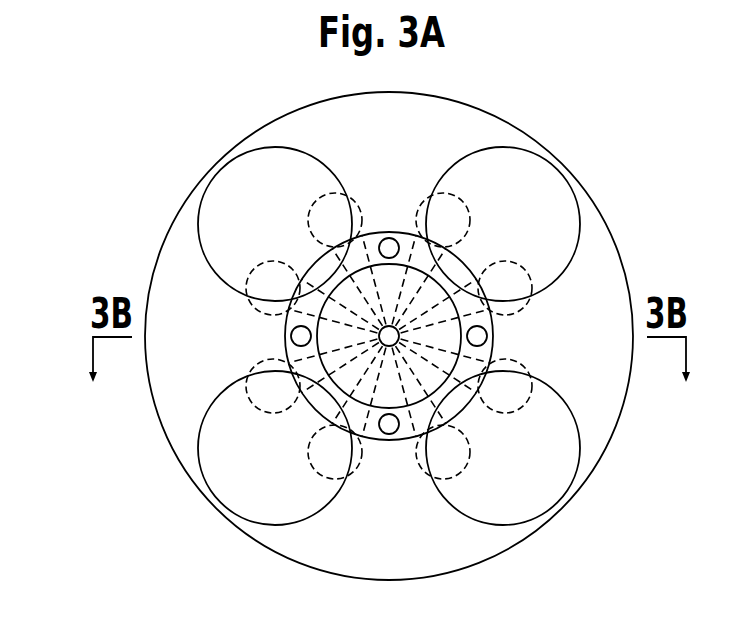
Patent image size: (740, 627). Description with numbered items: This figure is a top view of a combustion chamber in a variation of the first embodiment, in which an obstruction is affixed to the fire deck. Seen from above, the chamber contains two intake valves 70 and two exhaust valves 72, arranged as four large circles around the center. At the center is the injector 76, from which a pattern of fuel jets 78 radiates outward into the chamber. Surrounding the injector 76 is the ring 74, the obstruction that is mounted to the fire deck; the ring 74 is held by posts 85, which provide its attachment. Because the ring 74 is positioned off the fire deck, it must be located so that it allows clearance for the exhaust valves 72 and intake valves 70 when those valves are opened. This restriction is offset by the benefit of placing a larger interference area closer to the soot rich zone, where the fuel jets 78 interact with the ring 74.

The intake valves 70 is at (512, 178).
The exhaust valves 72 is at (243, 177).
The ring 74 is at (467, 267).
The injector 76 is at (389, 336).
The fuel jets 78 is at (255, 308).
The posts 85 is at (293, 302).